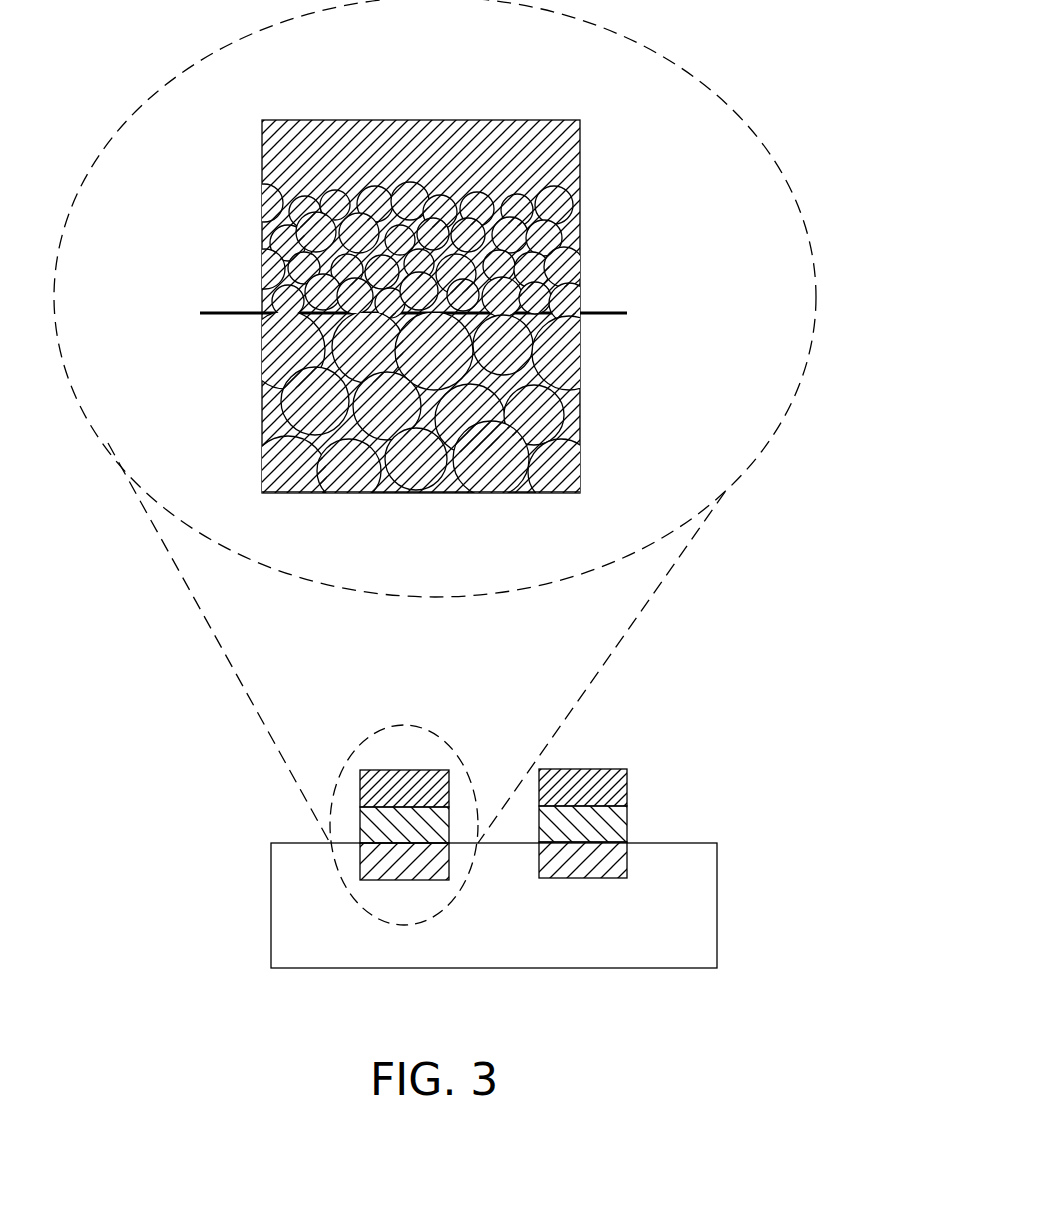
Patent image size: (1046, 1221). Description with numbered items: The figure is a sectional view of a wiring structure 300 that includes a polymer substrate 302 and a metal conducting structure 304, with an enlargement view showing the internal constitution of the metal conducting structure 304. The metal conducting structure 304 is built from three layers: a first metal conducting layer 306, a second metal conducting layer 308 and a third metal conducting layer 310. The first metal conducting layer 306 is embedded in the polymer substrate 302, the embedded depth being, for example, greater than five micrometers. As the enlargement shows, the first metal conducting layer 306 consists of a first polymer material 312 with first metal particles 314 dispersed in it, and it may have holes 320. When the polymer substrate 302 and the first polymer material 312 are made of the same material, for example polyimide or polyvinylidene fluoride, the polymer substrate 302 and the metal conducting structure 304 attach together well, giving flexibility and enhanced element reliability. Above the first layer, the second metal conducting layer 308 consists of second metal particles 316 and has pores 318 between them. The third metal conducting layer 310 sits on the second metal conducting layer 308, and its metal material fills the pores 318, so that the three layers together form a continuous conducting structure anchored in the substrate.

The wiring structure 300 is at (688, 680).
The polymer substrate 302 is at (601, 941).
The metal conducting structure 304 is at (544, 98).
The first metal conducting layer 306 is at (414, 595).
The second metal conducting layer 308 is at (448, 458).
The third metal conducting layer 310 is at (262, 157).
The first polymer material 312 is at (268, 405).
The first metal particles 314 is at (268, 447).
The second metal particles 316 is at (570, 272).
The pores 318 is at (462, 222).
The holes 320 is at (545, 455).